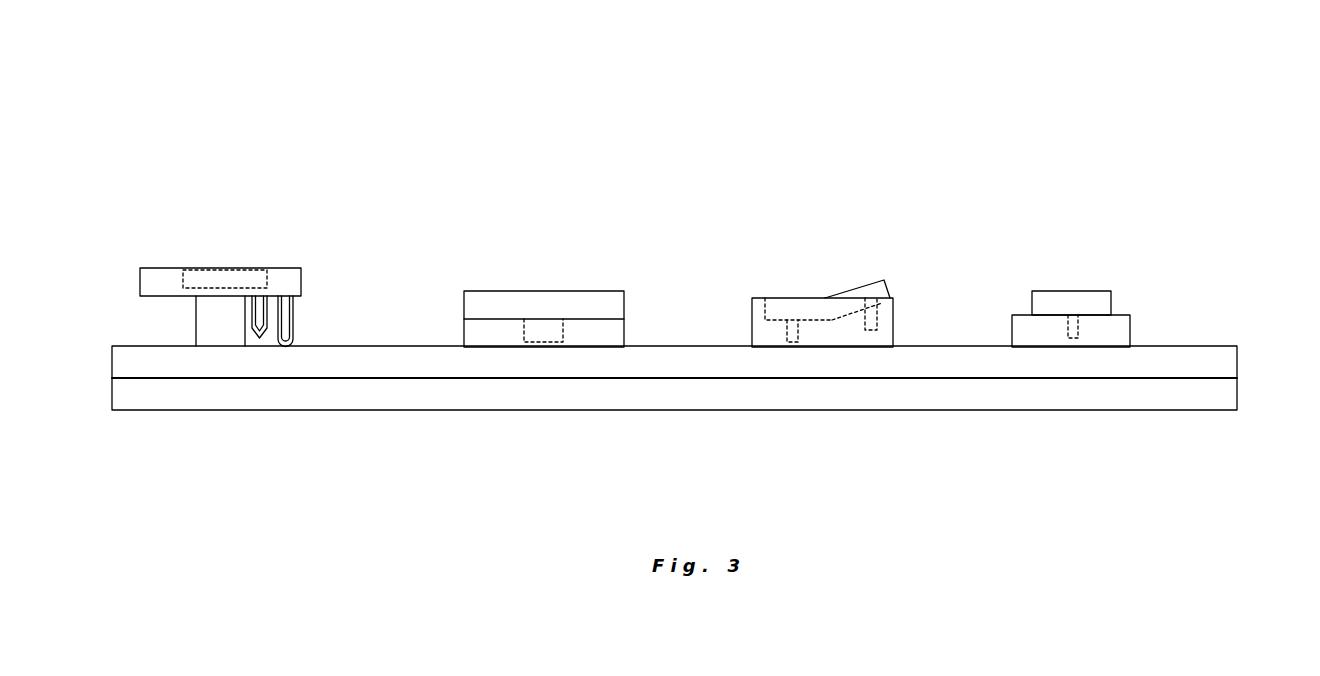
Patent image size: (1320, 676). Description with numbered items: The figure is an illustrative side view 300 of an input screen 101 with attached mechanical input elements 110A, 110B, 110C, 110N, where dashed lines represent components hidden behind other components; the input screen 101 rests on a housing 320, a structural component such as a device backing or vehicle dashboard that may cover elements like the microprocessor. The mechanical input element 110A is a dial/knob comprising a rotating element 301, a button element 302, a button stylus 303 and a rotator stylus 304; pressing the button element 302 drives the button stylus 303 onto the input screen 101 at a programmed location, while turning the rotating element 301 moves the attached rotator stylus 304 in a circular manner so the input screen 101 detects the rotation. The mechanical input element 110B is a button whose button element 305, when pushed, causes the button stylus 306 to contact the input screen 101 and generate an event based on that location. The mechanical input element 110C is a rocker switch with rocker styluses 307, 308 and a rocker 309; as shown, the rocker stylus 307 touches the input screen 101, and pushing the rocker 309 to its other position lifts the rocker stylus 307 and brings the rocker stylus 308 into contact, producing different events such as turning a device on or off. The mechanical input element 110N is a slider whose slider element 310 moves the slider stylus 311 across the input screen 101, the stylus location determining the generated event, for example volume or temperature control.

The side view 300 is at (701, 92).
The input screen 101 is at (1228, 346).
The housing 320 is at (1239, 392).
The mechanical input element 110A is at (242, 284).
The rotating element 301 is at (173, 280).
The button element 302 is at (202, 270).
The button stylus 303 is at (260, 313).
The rotator stylus 304 is at (287, 330).
The mechanical input element 110B is at (548, 297).
The button element 305 is at (516, 299).
The button stylus 306 is at (552, 329).
The mechanical input element 110C is at (839, 293).
The rocker stylus 307 is at (793, 325).
The rocker stylus 308 is at (870, 317).
The rocker 309 is at (872, 282).
The mechanical input element 110N is at (1077, 297).
The slider element 310 is at (1050, 298).
The slider stylus 311 is at (1077, 337).